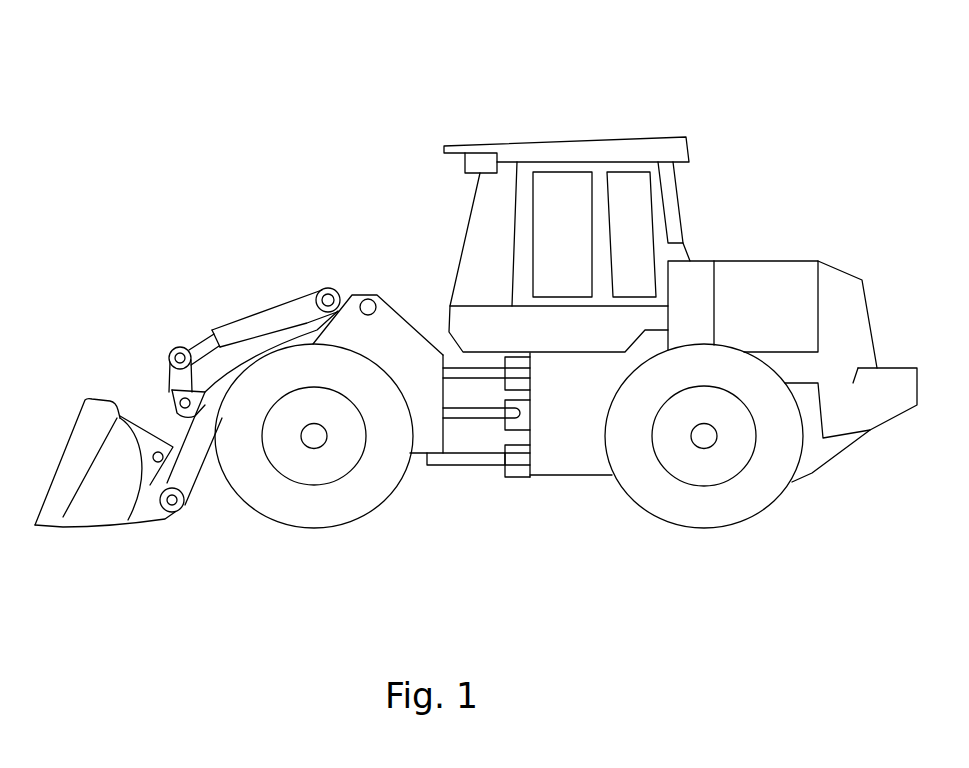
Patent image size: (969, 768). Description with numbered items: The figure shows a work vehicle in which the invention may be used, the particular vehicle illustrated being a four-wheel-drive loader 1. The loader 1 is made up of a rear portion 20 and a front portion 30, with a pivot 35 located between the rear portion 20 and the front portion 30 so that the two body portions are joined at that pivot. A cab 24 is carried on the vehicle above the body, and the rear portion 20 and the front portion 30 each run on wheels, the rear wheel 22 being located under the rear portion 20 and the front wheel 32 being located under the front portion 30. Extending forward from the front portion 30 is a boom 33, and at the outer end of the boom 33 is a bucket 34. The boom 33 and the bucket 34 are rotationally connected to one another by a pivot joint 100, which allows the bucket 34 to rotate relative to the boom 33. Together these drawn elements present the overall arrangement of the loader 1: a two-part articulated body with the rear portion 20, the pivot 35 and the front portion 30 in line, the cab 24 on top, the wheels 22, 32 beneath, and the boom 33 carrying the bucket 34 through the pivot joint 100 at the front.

The four-wheel-drive loader 1 is at (692, 101).
The rear portion 20 is at (758, 245).
The rear wheel 22 is at (663, 508).
The cab 24 is at (567, 130).
The front portion 30 is at (352, 287).
The front wheel 32 is at (335, 510).
The boom 33 is at (205, 475).
The bucket 34 is at (77, 455).
The pivot 35 is at (467, 475).
The pivot joint 100 is at (165, 527).